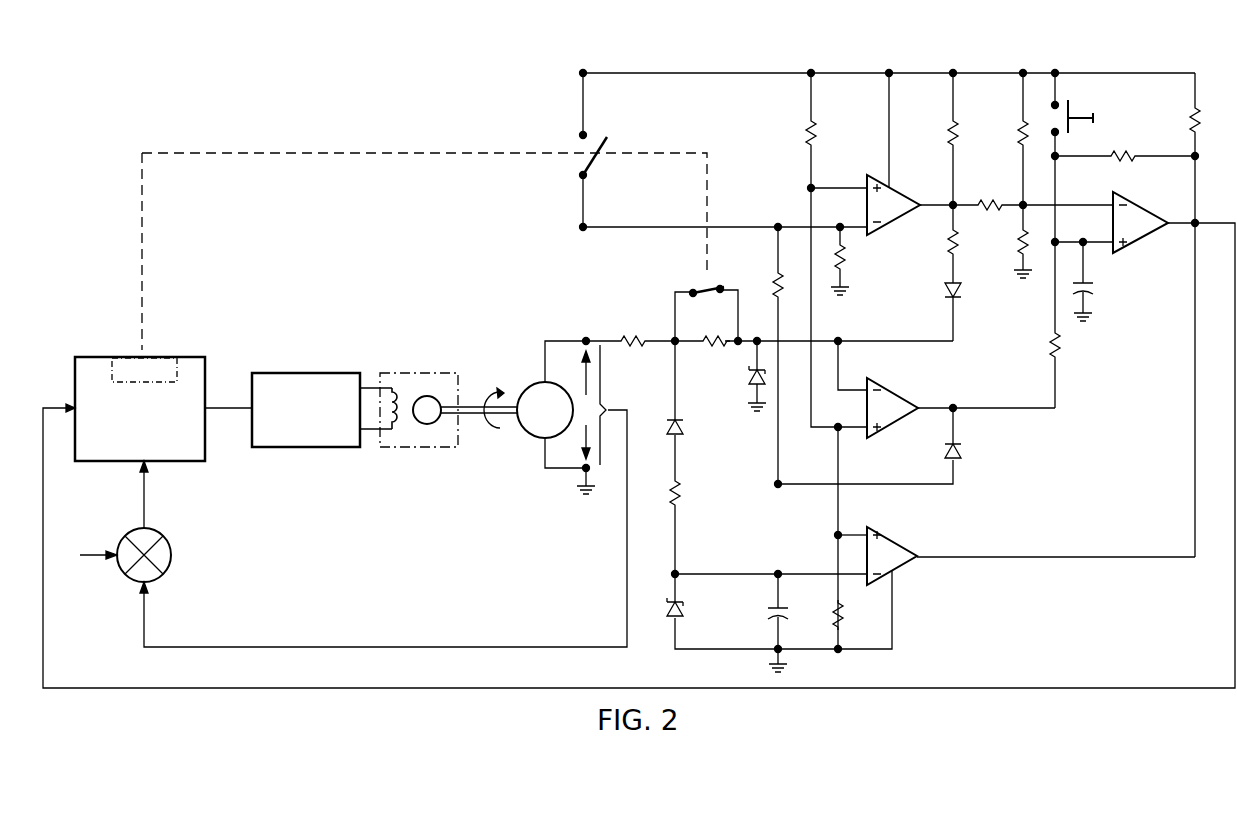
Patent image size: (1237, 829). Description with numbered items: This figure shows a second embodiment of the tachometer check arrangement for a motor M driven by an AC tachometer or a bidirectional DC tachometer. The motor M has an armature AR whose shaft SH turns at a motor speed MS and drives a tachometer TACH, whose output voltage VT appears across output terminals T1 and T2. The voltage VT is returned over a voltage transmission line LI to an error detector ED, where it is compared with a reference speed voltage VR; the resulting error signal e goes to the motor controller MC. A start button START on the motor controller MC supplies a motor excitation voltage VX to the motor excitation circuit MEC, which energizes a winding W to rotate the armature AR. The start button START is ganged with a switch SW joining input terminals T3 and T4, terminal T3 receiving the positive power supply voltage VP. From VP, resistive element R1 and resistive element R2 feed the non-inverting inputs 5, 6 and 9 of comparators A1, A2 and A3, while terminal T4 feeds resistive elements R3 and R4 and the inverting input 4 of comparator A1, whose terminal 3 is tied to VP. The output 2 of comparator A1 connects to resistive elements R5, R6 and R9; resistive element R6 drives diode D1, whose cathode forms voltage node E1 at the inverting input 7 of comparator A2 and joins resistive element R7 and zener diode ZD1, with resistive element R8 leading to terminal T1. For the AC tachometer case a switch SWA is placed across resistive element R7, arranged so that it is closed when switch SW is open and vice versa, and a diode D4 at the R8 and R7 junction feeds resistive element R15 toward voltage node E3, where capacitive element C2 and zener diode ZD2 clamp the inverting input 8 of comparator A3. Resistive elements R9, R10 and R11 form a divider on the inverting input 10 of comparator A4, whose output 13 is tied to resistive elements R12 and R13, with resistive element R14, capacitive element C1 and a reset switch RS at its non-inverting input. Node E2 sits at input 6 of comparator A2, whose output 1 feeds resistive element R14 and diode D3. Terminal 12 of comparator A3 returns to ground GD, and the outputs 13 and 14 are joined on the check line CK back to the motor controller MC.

The motor controller MC is at (172, 350).
The start button START is at (409, 267).
The motor excitation voltage VX is at (226, 406).
The error signal e is at (150, 494).
The error detector ED is at (171, 562).
The reference speed voltage signal VR is at (83, 555).
The voltage transmission line LI is at (432, 647).
The motor excitation circuit MEC is at (294, 372).
The motor M is at (386, 372).
The winding W is at (404, 418).
The armature AR is at (427, 410).
The shaft SH is at (472, 404).
The motor speed MS is at (494, 392).
The tachometer TACH is at (551, 404).
The tachometer output voltage VT is at (589, 405).
The output terminal T1 is at (584, 340).
The output terminal T2 is at (584, 470).
The input terminal T3 is at (580, 73).
The input terminal T4 is at (580, 227).
The positive power supply voltage VP is at (809, 72).
The switch SW is at (594, 137).
The switch SWA is at (724, 288).
The resistive element R1 is at (806, 130).
The resistive element R2 is at (828, 616).
The resistive element R3 is at (846, 258).
The resistive element R4 is at (788, 285).
The resistive element R5 is at (948, 128).
The resistive element R6 is at (946, 245).
The resistive element R7 is at (710, 336).
The resistive element R8 is at (626, 338).
The resistive element R9 is at (985, 200).
The resistive element R10 is at (1018, 132).
The resistive element R11 is at (1017, 246).
The resistive element R12 is at (1188, 112).
The resistive element R13 is at (1112, 152).
The resistive element R14 is at (1062, 340).
The resistive element R15 is at (686, 492).
The reset switch RS is at (1070, 100).
The comparator A1 is at (892, 230).
The comparator A2 is at (894, 386).
The comparator A3 is at (892, 535).
The comparator A4 is at (1133, 200).
The diode D1 is at (962, 292).
The diode D3 is at (962, 454).
The diode D4 is at (684, 428).
The zener diode ZD1 is at (748, 374).
The zener diode ZD2 is at (685, 612).
The capacitive element C1 is at (1095, 288).
The capacitive element C2 is at (766, 614).
The voltage node E1 is at (840, 338).
The voltage node E2 is at (836, 430).
The voltage node E3 is at (776, 572).
The ground terminal GD is at (792, 668).
The check line CK is at (980, 688).
The output terminal 1 is at (986, 398).
The output terminal 2 is at (936, 192).
The terminal 3 is at (895, 129).
The inverting input terminal 4 is at (855, 242).
The non-inverting input terminal 5 is at (855, 178).
The non-inverting input terminal 6 is at (855, 434).
The inverting input terminal 7 is at (855, 380).
The inverting input terminal 8 is at (855, 582).
The non-inverting input terminal 9 is at (851, 526).
The inverting input terminal 10 is at (614, 679).
The terminal 12 is at (1089, 519).
The output terminal 13 is at (1179, 212).
The output terminal 14 is at (1056, 544).